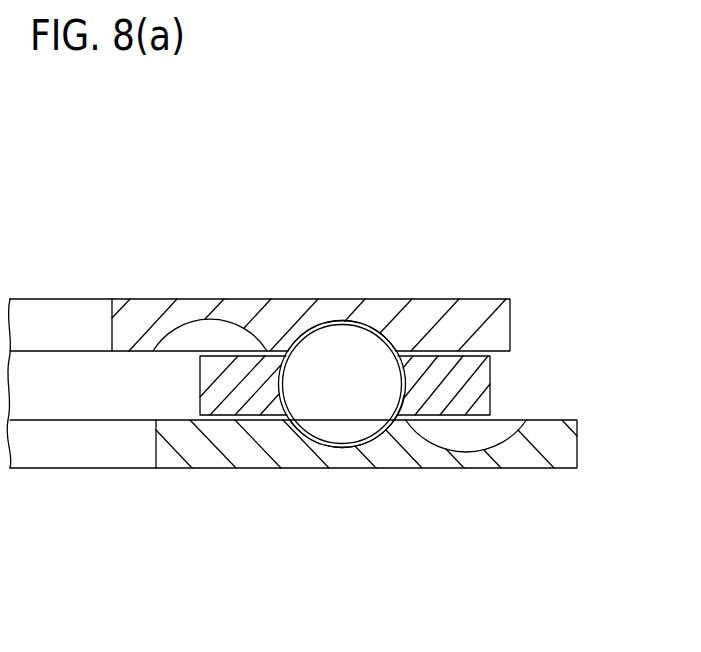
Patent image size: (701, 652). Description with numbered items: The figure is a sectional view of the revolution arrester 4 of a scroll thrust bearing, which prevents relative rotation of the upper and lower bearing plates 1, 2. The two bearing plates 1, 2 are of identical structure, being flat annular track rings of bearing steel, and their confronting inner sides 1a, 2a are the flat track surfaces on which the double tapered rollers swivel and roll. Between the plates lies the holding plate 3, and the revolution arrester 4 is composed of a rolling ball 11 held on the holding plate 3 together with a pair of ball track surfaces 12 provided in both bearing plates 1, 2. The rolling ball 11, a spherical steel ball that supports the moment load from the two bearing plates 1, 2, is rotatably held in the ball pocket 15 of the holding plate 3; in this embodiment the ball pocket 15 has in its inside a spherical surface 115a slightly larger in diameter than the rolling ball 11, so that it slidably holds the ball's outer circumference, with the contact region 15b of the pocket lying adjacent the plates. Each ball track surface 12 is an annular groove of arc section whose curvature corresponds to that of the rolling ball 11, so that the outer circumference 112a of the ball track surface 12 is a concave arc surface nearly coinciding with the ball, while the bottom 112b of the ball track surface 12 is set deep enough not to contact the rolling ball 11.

The revolution arrester 4 is at (45, 165).
The upper bearing plate 1 is at (530, 321).
The inner side of upper bearing plate 1a is at (117, 352).
The ball track surface 12 is at (222, 322).
The holding plate 3 is at (500, 388).
The lower bearing plate 2 is at (587, 450).
The inner side of lower bearing plate 2a is at (166, 420).
The rolling ball 11 is at (358, 342).
The ball pocket 15 is at (288, 381).
The outer circumference of ball track surface 112a is at (302, 335).
The bottom of ball track surface 112b is at (345, 317).
The contact region of ball pocket 15b is at (400, 348).
The spherical surface 115a is at (400, 395).